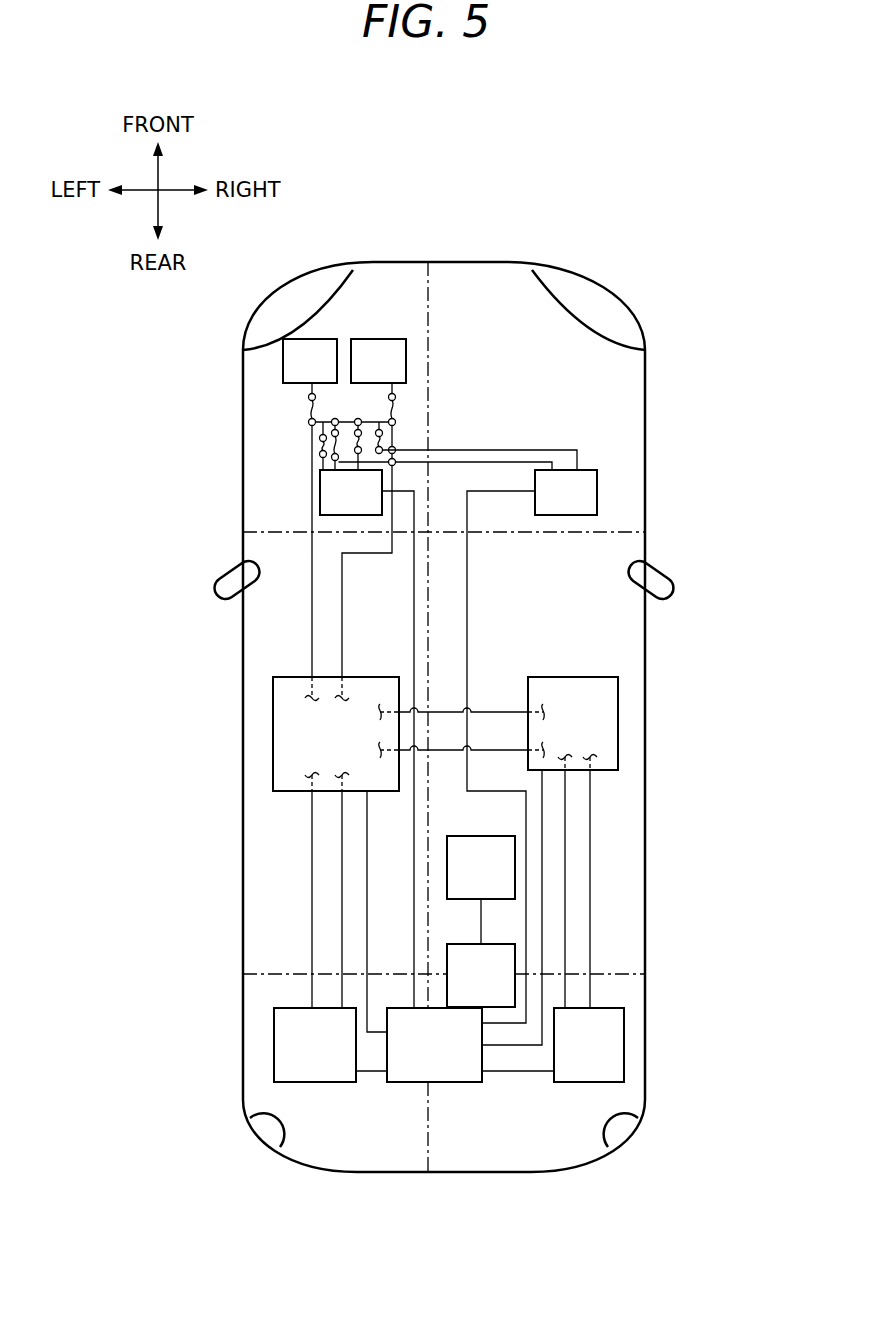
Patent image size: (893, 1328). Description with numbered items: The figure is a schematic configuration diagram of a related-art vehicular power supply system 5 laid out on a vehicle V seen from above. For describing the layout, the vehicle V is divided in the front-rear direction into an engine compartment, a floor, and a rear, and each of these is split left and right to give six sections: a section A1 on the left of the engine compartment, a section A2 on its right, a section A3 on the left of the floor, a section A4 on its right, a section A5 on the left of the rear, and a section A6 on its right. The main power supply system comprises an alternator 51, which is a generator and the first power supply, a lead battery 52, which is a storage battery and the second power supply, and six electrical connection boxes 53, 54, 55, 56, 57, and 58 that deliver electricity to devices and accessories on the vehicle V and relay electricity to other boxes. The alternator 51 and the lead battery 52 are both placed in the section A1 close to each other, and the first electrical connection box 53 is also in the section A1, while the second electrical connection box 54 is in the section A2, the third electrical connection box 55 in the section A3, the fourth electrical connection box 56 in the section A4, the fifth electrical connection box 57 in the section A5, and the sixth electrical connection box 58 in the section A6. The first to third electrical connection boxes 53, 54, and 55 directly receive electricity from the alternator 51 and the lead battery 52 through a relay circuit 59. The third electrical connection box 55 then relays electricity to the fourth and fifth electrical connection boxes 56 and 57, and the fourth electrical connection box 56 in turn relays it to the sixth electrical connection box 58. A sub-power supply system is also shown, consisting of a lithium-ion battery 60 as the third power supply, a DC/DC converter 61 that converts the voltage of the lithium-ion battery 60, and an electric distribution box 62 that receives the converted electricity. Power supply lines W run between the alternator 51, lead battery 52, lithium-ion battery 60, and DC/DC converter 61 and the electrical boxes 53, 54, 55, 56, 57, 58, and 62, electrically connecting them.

The vehicular power supply system 5 is at (329, 243).
The vehicle V is at (623, 368).
The section A1 is at (253, 428).
The section A2 is at (617, 420).
The section A3 is at (255, 690).
The section A4 is at (632, 685).
The section A5 is at (342, 1150).
The section A6 is at (584, 1148).
The power supply lines W is at (310, 637).
The alternator 51 is at (283, 358).
The lead battery 52 is at (388, 339).
The first electrical connection box 53 is at (320, 490).
The second electrical connection box 54 is at (597, 487).
The third electrical connection box 55 is at (273, 737).
The fourth electrical connection box 56 is at (618, 727).
The fifth electrical connection box 57 is at (274, 1050).
The sixth electrical connection box 58 is at (624, 1028).
The relay circuit 59 is at (306, 449).
The lithium-ion battery 60 is at (515, 863).
The DC/DC converter 61 is at (515, 957).
The electric distribution box 62 is at (462, 1082).